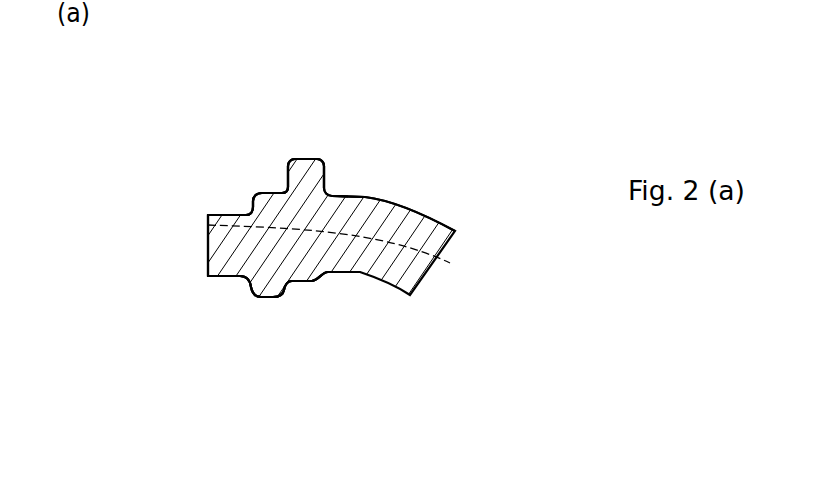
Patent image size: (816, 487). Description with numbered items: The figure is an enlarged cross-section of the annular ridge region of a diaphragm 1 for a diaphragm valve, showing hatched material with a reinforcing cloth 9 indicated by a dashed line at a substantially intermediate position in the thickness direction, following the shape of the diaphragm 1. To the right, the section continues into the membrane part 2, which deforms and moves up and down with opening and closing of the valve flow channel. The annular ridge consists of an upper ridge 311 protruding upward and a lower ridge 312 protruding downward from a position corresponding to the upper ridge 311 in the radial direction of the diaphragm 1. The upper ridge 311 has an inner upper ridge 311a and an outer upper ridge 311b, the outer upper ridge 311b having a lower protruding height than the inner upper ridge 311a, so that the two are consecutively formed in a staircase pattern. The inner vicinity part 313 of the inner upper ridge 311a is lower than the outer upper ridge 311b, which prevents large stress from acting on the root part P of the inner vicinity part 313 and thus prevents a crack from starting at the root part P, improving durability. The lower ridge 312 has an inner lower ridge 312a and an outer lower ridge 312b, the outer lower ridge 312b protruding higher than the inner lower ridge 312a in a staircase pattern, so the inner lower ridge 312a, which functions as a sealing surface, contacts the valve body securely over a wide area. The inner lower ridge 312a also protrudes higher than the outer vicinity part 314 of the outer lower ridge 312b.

The diaphragm 1 is at (189, 239).
The membrane part 2 is at (407, 207).
The reinforcing cloth 9 is at (412, 249).
The root part P is at (343, 192).
The upper ridge 311 is at (331, 83).
The inner upper ridge 311a is at (305, 158).
The outer upper ridge 311b is at (266, 191).
The lower ridge 312 is at (393, 403).
The inner lower ridge 312a is at (308, 283).
The outer lower ridge 312b is at (260, 298).
The inner vicinity part 313 is at (332, 196).
The outer vicinity part 314 is at (225, 278).